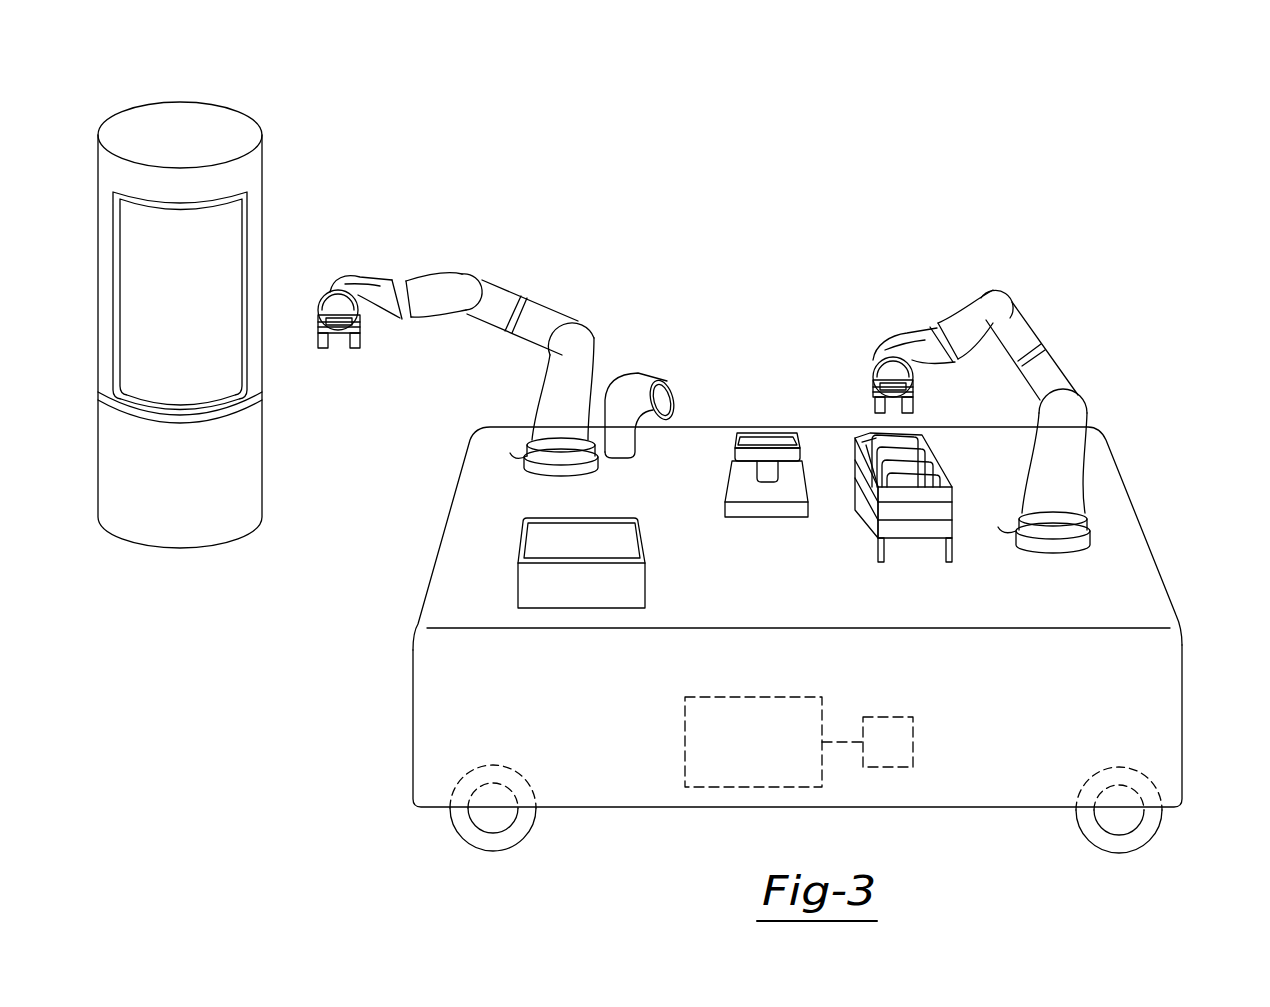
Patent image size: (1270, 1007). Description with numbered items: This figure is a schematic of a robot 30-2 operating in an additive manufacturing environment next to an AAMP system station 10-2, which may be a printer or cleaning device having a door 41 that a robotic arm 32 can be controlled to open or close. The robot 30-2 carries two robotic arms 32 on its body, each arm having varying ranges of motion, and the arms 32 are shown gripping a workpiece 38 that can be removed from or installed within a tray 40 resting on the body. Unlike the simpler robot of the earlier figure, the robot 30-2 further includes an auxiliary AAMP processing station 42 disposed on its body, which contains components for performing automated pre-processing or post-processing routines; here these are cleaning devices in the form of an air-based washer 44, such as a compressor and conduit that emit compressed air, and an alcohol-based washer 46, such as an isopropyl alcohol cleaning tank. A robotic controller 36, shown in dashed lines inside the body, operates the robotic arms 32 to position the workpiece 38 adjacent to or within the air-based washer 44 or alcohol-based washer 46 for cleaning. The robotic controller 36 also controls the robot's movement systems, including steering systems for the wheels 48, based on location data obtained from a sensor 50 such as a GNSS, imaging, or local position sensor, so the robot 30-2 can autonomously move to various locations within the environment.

The AAMP system station 10-2 is at (217, 297).
The door 41 is at (220, 217).
The robot 30-2 is at (781, 522).
The robotic arm 32 is at (515, 282).
The air-based washer 44 is at (650, 370).
The auxiliary AAMP processing station 42 is at (576, 478).
The alcohol-based washer 46 is at (517, 573).
The tray 40 is at (922, 466).
The workpiece 38 is at (920, 452).
The robotic controller 36 is at (803, 697).
The sensor 50 is at (913, 720).
The wheel 48 is at (527, 828).